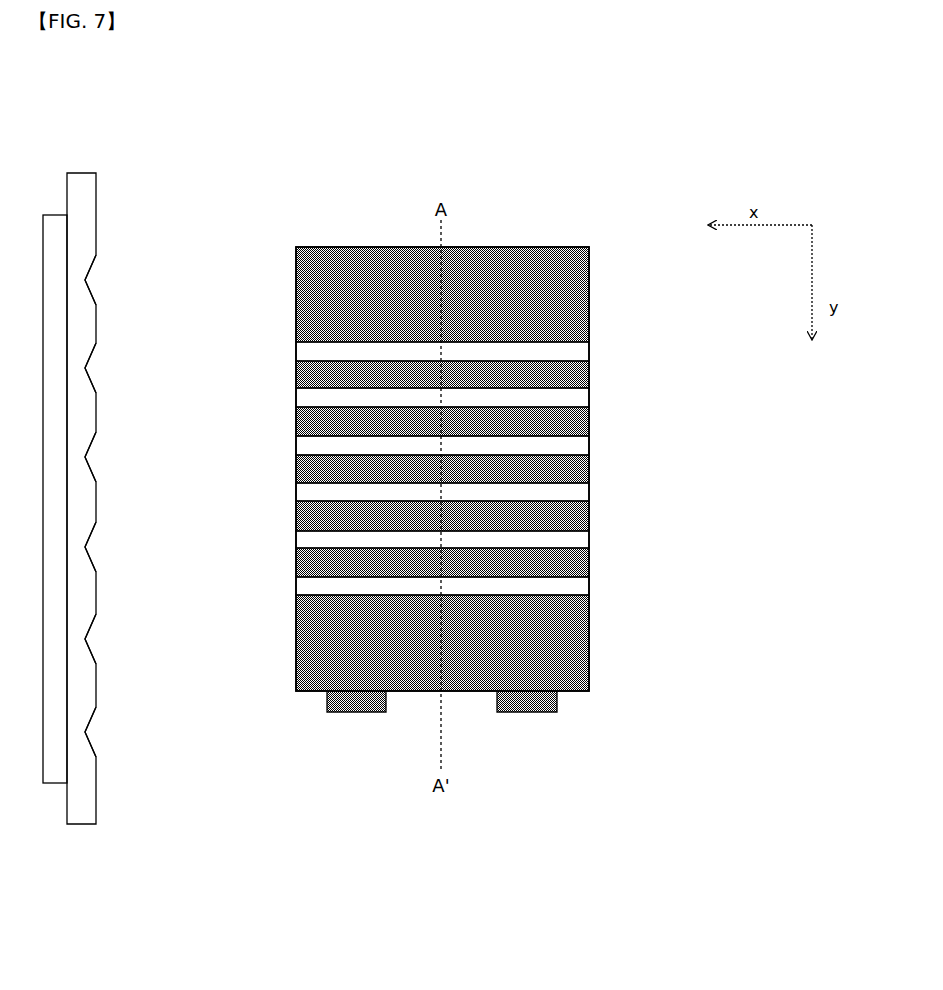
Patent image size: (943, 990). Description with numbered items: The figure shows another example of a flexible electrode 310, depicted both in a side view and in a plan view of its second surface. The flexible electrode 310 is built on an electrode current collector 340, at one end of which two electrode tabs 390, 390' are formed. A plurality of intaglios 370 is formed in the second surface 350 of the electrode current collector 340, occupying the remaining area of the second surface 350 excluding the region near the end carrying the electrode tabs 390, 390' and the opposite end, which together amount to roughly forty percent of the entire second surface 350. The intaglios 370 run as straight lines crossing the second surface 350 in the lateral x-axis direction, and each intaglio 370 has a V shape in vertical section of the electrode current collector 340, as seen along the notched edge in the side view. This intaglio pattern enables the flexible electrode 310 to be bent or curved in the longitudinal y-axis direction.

The flexible electrode 310 is at (45, 163).
The electrode current collector 340 is at (90, 825).
The second surface 350 is at (318, 311).
The intaglios 370 is at (100, 638).
The electrode tab 390 is at (334, 741).
The electrode tab 390' is at (573, 727).